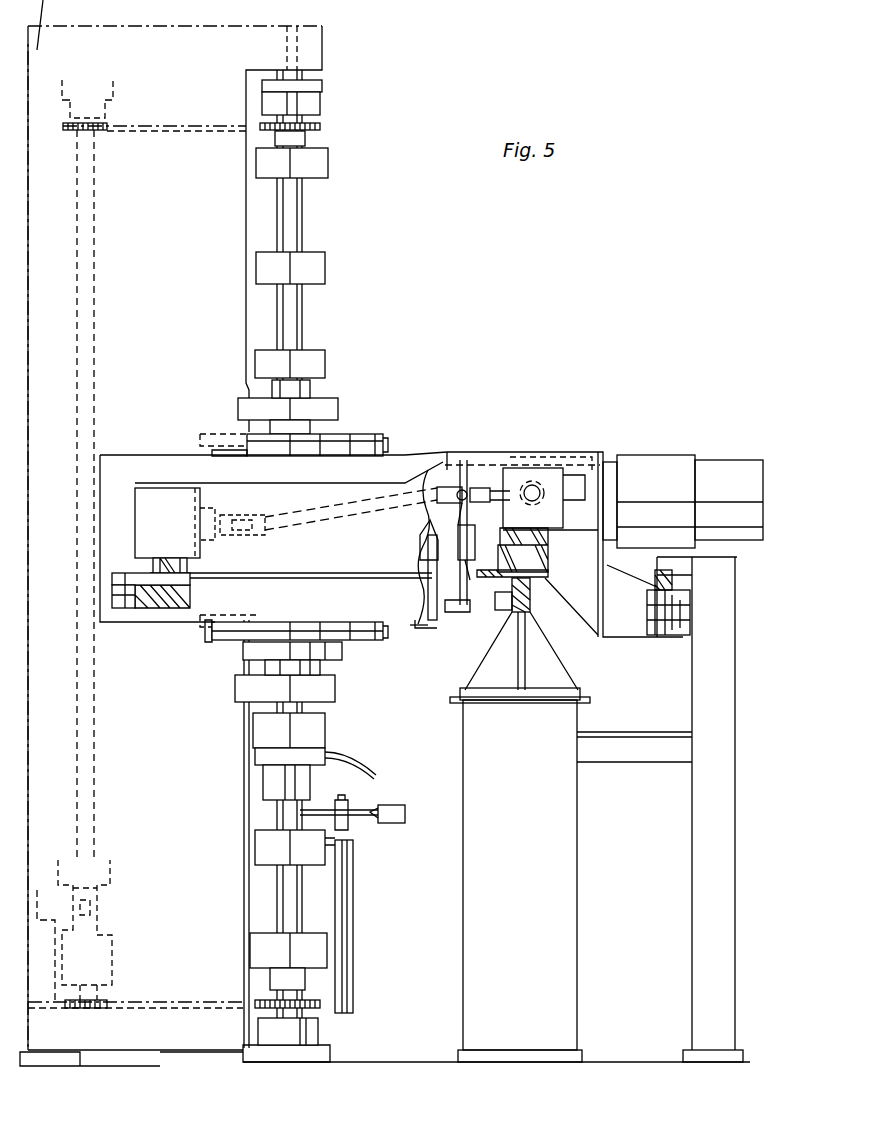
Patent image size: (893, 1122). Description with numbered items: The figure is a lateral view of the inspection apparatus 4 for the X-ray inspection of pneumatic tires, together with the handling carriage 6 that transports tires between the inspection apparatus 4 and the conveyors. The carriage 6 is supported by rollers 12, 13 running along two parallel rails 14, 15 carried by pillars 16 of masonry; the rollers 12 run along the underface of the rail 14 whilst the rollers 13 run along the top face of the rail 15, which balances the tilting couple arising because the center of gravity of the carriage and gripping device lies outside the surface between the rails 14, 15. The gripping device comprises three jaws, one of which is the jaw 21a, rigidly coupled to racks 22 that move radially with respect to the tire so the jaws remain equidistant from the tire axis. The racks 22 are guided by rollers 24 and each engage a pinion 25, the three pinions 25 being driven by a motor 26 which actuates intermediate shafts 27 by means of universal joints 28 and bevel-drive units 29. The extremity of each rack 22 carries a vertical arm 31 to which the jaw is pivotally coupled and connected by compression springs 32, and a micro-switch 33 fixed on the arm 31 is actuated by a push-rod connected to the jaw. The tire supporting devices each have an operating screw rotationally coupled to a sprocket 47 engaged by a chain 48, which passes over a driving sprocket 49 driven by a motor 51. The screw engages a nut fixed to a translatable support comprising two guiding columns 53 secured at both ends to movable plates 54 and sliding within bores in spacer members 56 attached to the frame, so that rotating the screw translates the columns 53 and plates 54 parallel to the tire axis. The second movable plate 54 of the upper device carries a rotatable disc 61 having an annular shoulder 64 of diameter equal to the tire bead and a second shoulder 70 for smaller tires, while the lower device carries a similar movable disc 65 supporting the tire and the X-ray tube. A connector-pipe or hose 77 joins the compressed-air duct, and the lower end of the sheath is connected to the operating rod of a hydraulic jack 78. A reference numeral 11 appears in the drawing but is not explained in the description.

The inspection apparatus 4 is at (347, 314).
The handling carriage 6 is at (581, 642).
The shaft 11 is at (333, 566).
The rollers 12 is at (660, 635).
The rollers 13 is at (546, 582).
The rail 14 is at (657, 580).
The rail 15 is at (520, 598).
The pillars 16 is at (567, 845).
The jaw 21a is at (422, 630).
The racks 22 is at (483, 465).
The rollers 24 is at (190, 605).
The pinion 25 is at (187, 574).
The motor 26 is at (648, 470).
The intermediate shafts 27 is at (322, 520).
The universal joints 28 is at (258, 535).
The bevel-drive units 29 is at (160, 490).
The vertical arm 31 is at (440, 610).
The compression springs 32 is at (418, 553).
The micro-switch 33 is at (470, 547).
The sprocket 47 is at (322, 127).
The chain 48 is at (175, 130).
The driving sprocket 49 is at (68, 132).
The motor 51 is at (71, 931).
The guiding columns 53 is at (300, 332).
The movable plates 54 is at (328, 165).
The spacer members 56 is at (322, 268).
The disc 61 is at (372, 452).
The annular shoulder 64 is at (215, 456).
The movable disc 65 is at (280, 622).
The second shoulder 70 is at (212, 440).
The connector-pipe or hose 77 is at (360, 765).
The hydraulic jack 78 is at (353, 927).